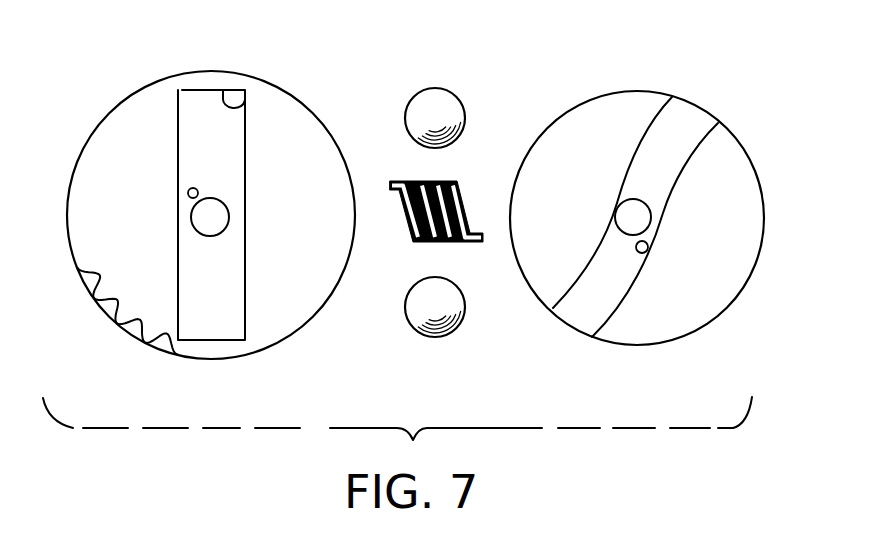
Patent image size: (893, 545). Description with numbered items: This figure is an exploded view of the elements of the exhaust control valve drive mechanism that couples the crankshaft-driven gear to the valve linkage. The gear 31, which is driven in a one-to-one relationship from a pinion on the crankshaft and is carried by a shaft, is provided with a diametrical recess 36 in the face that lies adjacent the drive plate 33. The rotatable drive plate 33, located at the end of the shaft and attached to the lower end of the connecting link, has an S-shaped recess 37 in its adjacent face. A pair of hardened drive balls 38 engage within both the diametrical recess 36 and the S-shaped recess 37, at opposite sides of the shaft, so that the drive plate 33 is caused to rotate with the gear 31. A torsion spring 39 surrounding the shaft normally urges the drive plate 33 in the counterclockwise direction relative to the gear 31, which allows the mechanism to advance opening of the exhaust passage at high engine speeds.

The gear 31 is at (315, 165).
The drive plate 33 is at (737, 180).
The diametrical recess 36 is at (248, 107).
The S-shaped recess 37 is at (580, 315).
The drive balls 38 is at (508, 58).
The torsion spring 39 is at (462, 222).